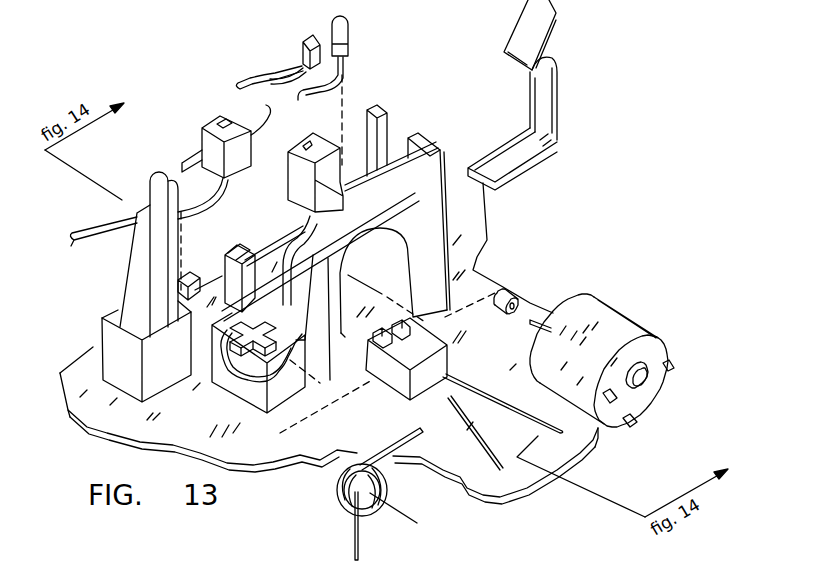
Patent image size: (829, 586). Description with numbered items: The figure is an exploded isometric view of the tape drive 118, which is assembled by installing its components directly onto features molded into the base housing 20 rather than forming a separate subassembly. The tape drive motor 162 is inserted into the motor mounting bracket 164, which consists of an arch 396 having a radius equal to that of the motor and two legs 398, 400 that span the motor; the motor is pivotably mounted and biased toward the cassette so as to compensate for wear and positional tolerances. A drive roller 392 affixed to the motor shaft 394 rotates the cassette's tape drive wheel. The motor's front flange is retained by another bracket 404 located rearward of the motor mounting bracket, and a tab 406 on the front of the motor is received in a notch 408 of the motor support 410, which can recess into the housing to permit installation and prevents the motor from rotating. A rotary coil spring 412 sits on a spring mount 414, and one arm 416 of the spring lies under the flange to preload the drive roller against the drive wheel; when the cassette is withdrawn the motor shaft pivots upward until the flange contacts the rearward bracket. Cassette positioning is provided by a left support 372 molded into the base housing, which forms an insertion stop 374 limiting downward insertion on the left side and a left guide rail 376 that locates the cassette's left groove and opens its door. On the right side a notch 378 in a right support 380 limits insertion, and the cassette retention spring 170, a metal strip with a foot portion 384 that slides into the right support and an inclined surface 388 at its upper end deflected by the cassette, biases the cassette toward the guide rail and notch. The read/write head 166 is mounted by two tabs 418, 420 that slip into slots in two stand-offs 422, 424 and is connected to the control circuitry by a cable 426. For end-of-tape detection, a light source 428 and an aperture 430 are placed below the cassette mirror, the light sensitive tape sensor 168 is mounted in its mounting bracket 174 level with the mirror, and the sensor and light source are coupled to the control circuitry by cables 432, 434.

The base housing 20 is at (477, 252).
The tape drive 118 is at (583, 243).
The tape drive motor 162 is at (634, 318).
The motor mounting bracket 164 is at (421, 412).
The read/write head 166 is at (201, 130).
The tape sensor 168 is at (302, 53).
The cassette retention spring 170 is at (548, 95).
The mounting bracket 174 is at (312, 142).
The left support 372 is at (167, 392).
The insertion stop 374 is at (181, 312).
The left guide rail 376 is at (152, 162).
The notch 378 is at (398, 158).
The right support 380 is at (390, 152).
The foot portion 384 is at (530, 173).
The inclined surface 388 is at (525, 22).
The drive roller 392 is at (486, 313).
The motor shaft 394 is at (537, 326).
The arch 396 is at (357, 250).
The leg 398 is at (336, 333).
The leg 400 is at (430, 268).
The bracket 404 is at (328, 236).
The tab 406 is at (630, 424).
The notch 408 is at (407, 350).
The motor support 410 is at (440, 356).
The rotary coil spring 412 is at (403, 487).
The spring mount 414 is at (250, 325).
The arm 416 is at (408, 433).
The tab 418 is at (188, 150).
The tab 420 is at (258, 126).
The stand-off 422 is at (187, 272).
The stand-off 424 is at (234, 245).
The cable 426 is at (93, 226).
The light source 428 is at (349, 46).
The aperture 430 is at (290, 225).
The cable 432 is at (265, 77).
The cable 434 is at (345, 80).